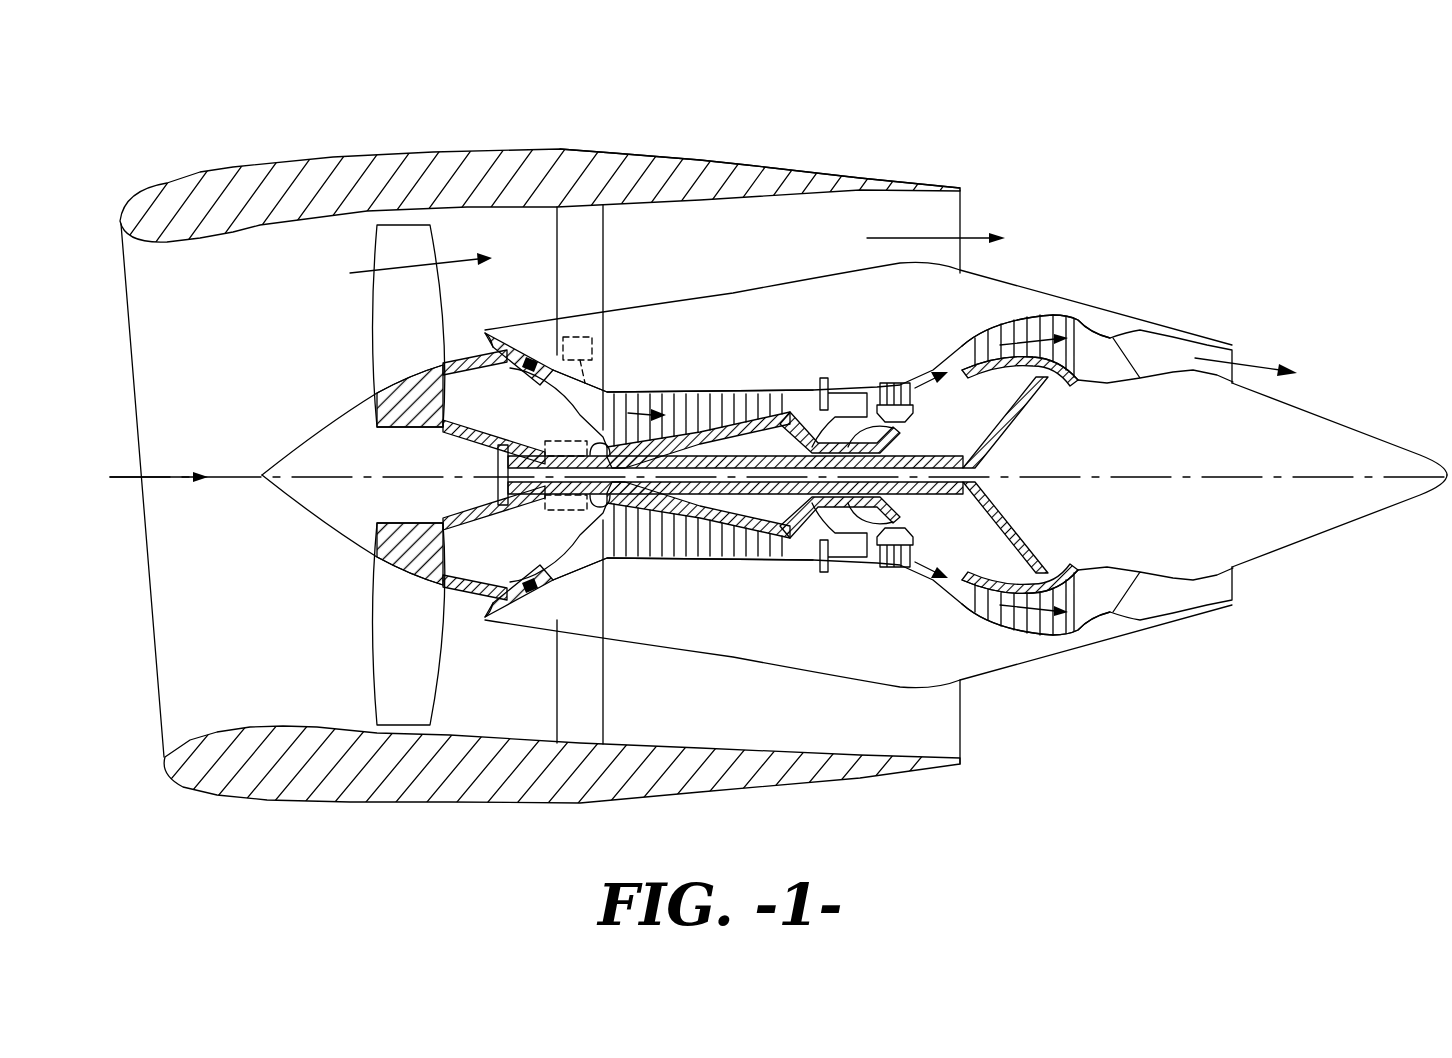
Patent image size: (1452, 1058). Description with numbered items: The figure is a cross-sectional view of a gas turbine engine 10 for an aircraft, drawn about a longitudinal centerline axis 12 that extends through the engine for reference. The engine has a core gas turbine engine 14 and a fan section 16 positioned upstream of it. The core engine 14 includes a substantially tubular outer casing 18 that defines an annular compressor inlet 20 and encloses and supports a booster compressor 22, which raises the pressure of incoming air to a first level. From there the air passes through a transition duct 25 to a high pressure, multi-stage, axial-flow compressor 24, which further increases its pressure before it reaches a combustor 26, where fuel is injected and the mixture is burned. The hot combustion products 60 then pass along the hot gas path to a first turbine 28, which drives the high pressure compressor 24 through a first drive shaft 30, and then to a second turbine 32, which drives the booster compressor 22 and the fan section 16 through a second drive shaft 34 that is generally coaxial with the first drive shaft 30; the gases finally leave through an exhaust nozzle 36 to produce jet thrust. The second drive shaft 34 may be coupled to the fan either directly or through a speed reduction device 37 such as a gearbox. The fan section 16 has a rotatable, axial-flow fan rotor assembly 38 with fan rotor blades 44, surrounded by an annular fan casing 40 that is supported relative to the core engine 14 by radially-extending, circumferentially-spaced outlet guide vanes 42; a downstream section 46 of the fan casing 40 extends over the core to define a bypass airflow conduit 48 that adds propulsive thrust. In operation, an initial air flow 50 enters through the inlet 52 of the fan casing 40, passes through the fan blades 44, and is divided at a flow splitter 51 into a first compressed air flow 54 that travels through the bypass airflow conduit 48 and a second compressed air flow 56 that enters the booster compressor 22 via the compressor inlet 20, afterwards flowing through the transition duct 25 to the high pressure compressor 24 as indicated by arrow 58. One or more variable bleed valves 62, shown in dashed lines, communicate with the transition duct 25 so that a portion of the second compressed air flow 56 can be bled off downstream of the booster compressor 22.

The gas turbine engine 10 is at (1154, 226).
The centerline axis 12 is at (1140, 470).
The core gas turbine engine 14 is at (787, 340).
The fan section 16 is at (456, 124).
The outer casing 18 is at (807, 673).
The compressor inlet 20 is at (478, 608).
The booster compressor 22 is at (553, 577).
The high pressure compressor 24 is at (638, 548).
The transition duct 25 is at (607, 402).
The combustor 26 is at (843, 557).
The first turbine 28 is at (932, 555).
The first drive shaft 30 is at (893, 422).
The second turbine 32 is at (1067, 635).
The second drive shaft 34 is at (557, 440).
The exhaust nozzle 36 is at (1236, 350).
The speed reduction device 37 is at (560, 513).
The fan rotor assembly 38 is at (443, 427).
The fan casing 40 is at (443, 807).
The outlet guide vanes 42 is at (603, 258).
The fan rotor blades 44 is at (368, 668).
The downstream section 46 is at (847, 180).
The bypass airflow conduit 48 is at (770, 253).
The initial air flow 50 is at (158, 475).
The flow splitter 51 is at (499, 330).
The inlet 52 is at (157, 725).
The first compressed air flow 54 is at (388, 265).
The second compressed air flow 56 is at (467, 347).
The air flow to high pressure compressor 58 is at (622, 397).
The combustion products 60 is at (903, 386).
The variable bleed valve 62 is at (580, 337).